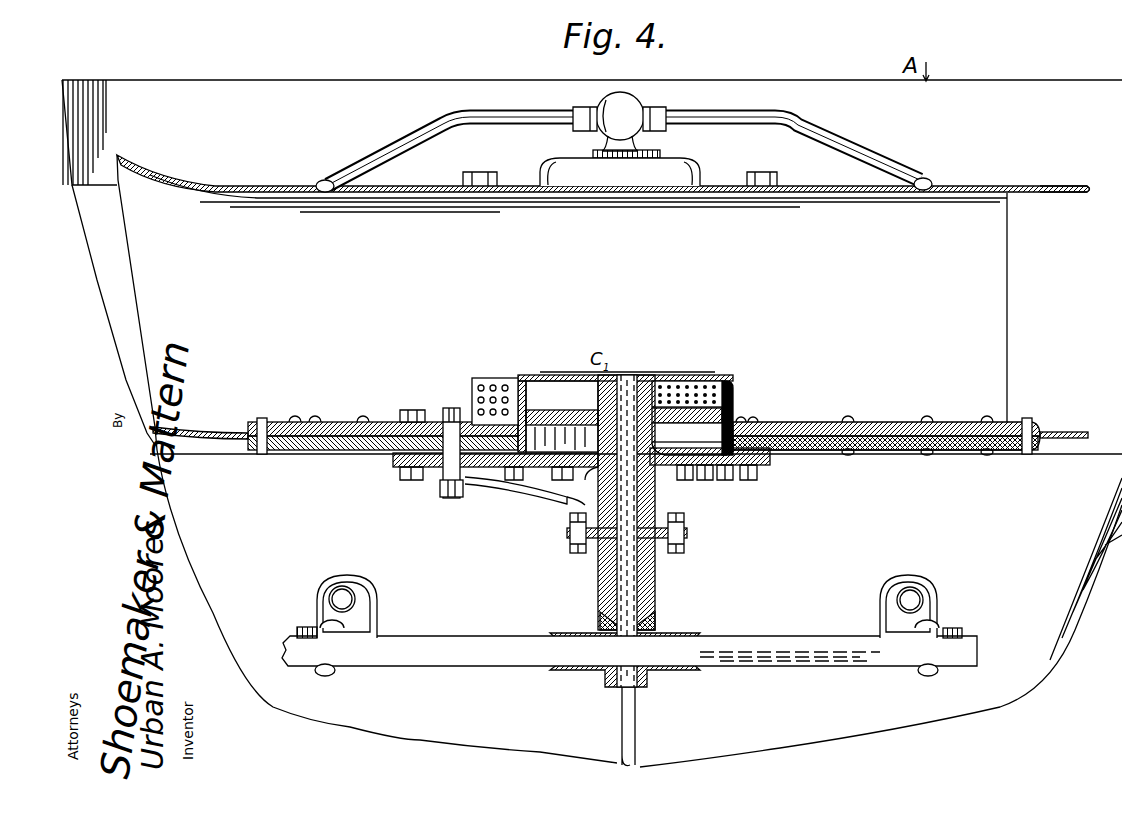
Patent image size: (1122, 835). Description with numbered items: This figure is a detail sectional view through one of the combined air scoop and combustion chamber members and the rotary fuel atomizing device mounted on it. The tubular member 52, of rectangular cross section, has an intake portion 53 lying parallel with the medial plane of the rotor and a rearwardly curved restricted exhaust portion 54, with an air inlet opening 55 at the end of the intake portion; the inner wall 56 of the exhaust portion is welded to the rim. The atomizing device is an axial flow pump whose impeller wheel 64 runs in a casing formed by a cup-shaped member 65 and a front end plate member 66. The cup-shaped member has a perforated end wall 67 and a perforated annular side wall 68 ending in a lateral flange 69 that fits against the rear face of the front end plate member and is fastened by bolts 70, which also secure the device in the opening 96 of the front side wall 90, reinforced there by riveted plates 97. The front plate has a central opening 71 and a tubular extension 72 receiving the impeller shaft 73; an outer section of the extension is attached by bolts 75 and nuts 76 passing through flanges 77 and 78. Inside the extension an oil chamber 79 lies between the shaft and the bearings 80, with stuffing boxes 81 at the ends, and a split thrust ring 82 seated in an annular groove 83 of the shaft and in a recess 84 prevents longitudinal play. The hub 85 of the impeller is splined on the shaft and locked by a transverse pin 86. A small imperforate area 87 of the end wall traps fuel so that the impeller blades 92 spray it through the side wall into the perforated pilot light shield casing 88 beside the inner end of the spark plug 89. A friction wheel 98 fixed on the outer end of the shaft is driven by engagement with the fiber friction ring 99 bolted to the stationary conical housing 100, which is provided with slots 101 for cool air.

The tubular member 52 is at (451, 186).
The intake portion 53 is at (1045, 193).
The exhaust portion 54 is at (154, 172).
The air inlet opening 55 is at (1093, 432).
The inner wall 56 is at (799, 205).
The impeller wheel 64 is at (569, 400).
The cup-shaped member 65 is at (733, 380).
The front end plate member 66 is at (765, 467).
The end wall 67 is at (705, 380).
The annular side wall 68 is at (733, 392).
The lateral flange 69 is at (466, 470).
The bolts 70 is at (517, 478).
The central opening 71 is at (650, 486).
The tubular extension 72 is at (680, 500).
The shaft 73 is at (617, 582).
The bolts 75 is at (580, 555).
The nuts 76 is at (567, 548).
The flange 77 is at (560, 540).
The flange 78 is at (568, 500).
The oil chamber 79 is at (656, 580).
The bearings 80 is at (656, 600).
The stuffing boxes 81 is at (655, 620).
The split thrust ring 82 is at (522, 590).
The annular groove 83 is at (580, 528).
The recess 84 is at (660, 560).
The hub 85 is at (648, 380).
The transverse pin 86 is at (636, 375).
The imperforate area 87 is at (527, 375).
The pilot light shield casing 88 is at (500, 380).
The spark plug 89 is at (457, 420).
The front side wall 90 is at (757, 422).
The impeller wheel blades 92 is at (548, 380).
The opening 96 is at (685, 470).
The reinforcing plates 97 is at (828, 428).
The friction wheel 98 is at (568, 672).
The friction ring 99 is at (748, 665).
The conical housing 100 is at (470, 750).
The slots 101 is at (618, 762).